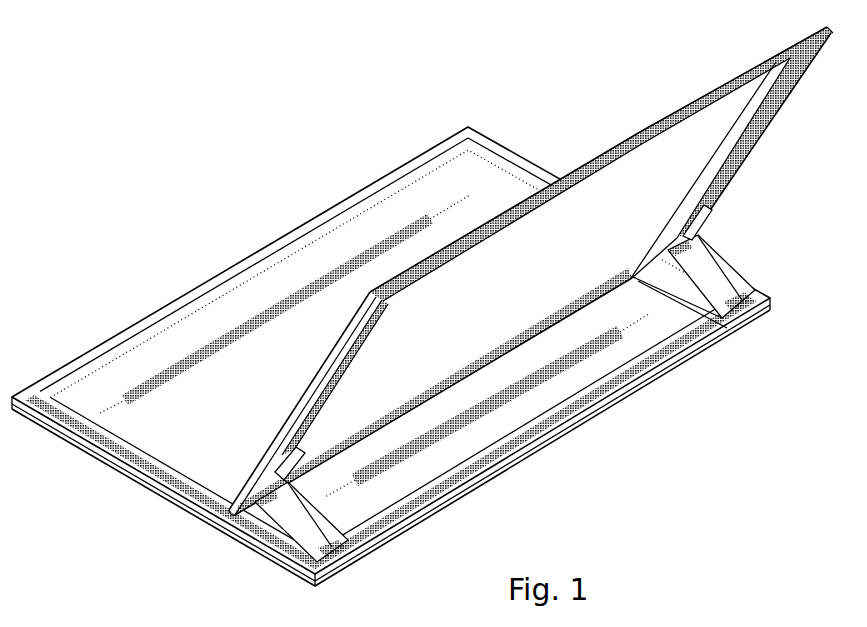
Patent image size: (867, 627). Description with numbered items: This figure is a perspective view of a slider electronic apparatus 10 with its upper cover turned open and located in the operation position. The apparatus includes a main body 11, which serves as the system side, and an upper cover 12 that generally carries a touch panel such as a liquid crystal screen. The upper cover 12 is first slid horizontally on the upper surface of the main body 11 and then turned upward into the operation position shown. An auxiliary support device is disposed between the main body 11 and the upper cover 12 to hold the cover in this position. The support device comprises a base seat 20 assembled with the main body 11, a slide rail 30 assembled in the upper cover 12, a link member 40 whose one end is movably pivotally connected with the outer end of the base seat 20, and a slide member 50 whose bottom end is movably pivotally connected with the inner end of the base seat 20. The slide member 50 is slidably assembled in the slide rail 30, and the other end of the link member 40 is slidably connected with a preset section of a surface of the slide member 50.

The slider electronic apparatus 10 is at (146, 504).
The main body 11 is at (73, 446).
The upper cover 12 is at (658, 118).
The base seat 20 is at (700, 340).
The slide rail 30 is at (787, 118).
The link member 40 is at (713, 268).
The slide member 50 is at (713, 222).